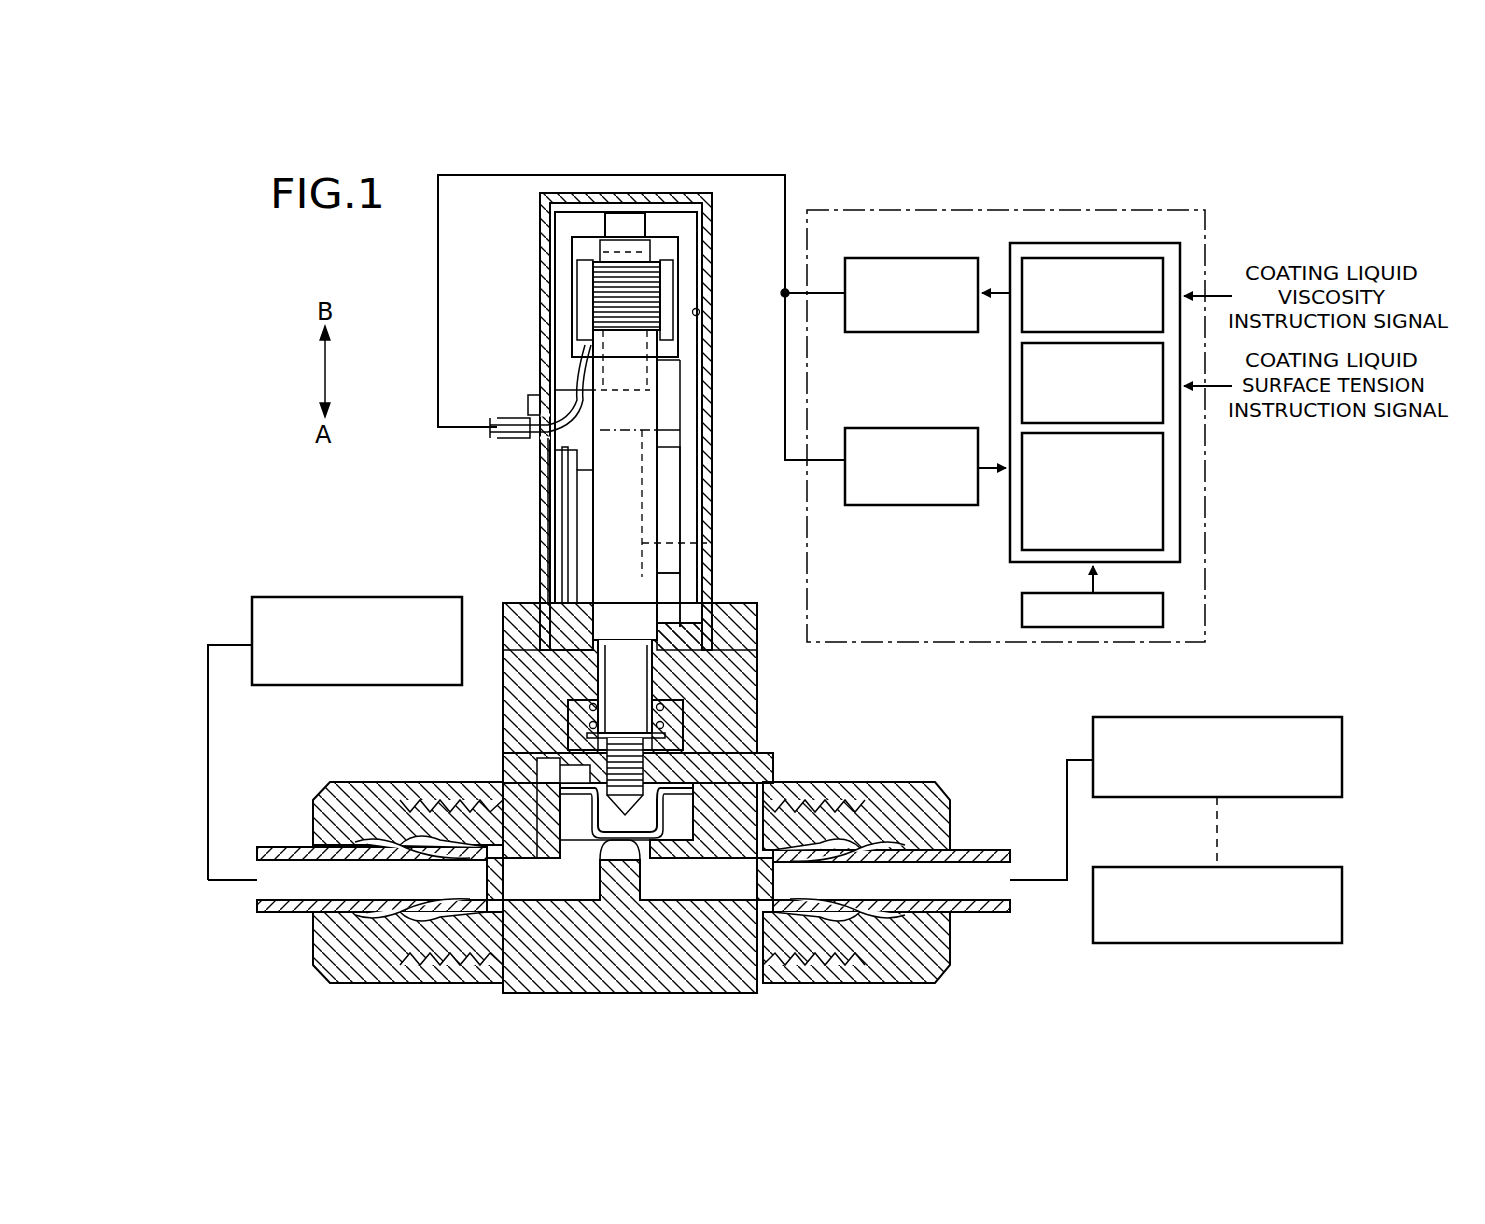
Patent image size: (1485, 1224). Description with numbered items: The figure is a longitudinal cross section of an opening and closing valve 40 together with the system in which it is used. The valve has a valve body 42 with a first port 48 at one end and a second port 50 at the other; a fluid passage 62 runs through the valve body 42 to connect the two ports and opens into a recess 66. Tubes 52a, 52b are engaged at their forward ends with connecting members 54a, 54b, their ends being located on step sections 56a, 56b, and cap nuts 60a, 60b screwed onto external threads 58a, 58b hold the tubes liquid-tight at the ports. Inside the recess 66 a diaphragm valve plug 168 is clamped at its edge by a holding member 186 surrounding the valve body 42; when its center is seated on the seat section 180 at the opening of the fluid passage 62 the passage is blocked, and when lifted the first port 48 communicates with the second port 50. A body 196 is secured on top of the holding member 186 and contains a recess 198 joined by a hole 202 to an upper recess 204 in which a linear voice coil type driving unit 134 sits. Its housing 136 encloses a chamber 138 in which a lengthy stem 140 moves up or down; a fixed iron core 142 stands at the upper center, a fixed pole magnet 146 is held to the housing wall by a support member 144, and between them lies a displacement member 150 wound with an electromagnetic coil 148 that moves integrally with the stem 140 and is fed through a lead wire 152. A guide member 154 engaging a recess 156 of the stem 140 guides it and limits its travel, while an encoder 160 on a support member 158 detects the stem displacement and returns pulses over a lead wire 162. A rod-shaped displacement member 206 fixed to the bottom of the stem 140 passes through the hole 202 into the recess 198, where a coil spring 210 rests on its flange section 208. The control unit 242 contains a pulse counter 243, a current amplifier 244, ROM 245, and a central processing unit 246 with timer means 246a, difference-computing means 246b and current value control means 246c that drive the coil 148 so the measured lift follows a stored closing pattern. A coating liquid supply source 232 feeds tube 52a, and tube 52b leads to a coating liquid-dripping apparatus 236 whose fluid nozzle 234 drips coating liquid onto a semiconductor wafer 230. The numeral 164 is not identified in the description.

The opening and closing valve 40 is at (1055, 411).
The valve body 42 is at (615, 902).
The first port 48 is at (478, 880).
The second port 50 is at (770, 895).
The tube 52a is at (266, 845).
The tube 52b is at (990, 848).
The connecting member 54a is at (375, 842).
The connecting member 54b is at (892, 848).
The step section 56a is at (432, 848).
The step section 56b is at (835, 850).
The external thread 58a is at (515, 930).
The external thread 58b is at (840, 943).
The cap nut 60a is at (345, 975).
The cap nut 60b is at (932, 975).
The fluid passage 62 is at (711, 879).
The recess 66 is at (583, 830).
The linear voice coil type driving unit 134 is at (540, 198).
The housing 136 is at (706, 226).
The chamber 138 is at (699, 312).
The stem 140 is at (625, 490).
The fixed iron core 142 is at (620, 225).
The support member 144 is at (683, 372).
The fixed pole magnet 146 is at (672, 278).
The electromagnetic coil 148 is at (623, 285).
The displacement member (bobbin) 150 is at (600, 352).
The lead wire 152 is at (580, 395).
The guide member 154 is at (665, 513).
The recess 156 is at (707, 543).
The support member 158 is at (565, 500).
The encoder (lift-detecting means) 160 is at (585, 535).
The lead wire 162 is at (548, 462).
The cap 164 is at (514, 603).
The valve plug 168 is at (650, 845).
The seat section 180 is at (630, 847).
The holding member 186 is at (757, 760).
The body 196 is at (735, 610).
The recess 198 is at (652, 678).
The hole 202 is at (655, 658).
The recess 204 is at (626, 651).
The rod-shaped displacement member 206 is at (623, 660).
The flange section 208 is at (683, 725).
The coil spring 210 is at (663, 707).
The semiconductor wafer 230 is at (1132, 867).
The coating liquid supply source 232 is at (282, 597).
The fluid nozzle 234 is at (1217, 808).
The coating liquid-dripping apparatus 236 is at (1300, 717).
The control unit 242 is at (1205, 230).
The pulse counter 243 is at (876, 505).
The current amplifier 244 is at (876, 332).
The ROM (storage means) 245 is at (1022, 612).
The central processing unit 246 is at (1057, 390).
The timer means 246a is at (1022, 315).
The difference-computing means 246b is at (1022, 403).
The current value control means 246c is at (1022, 518).